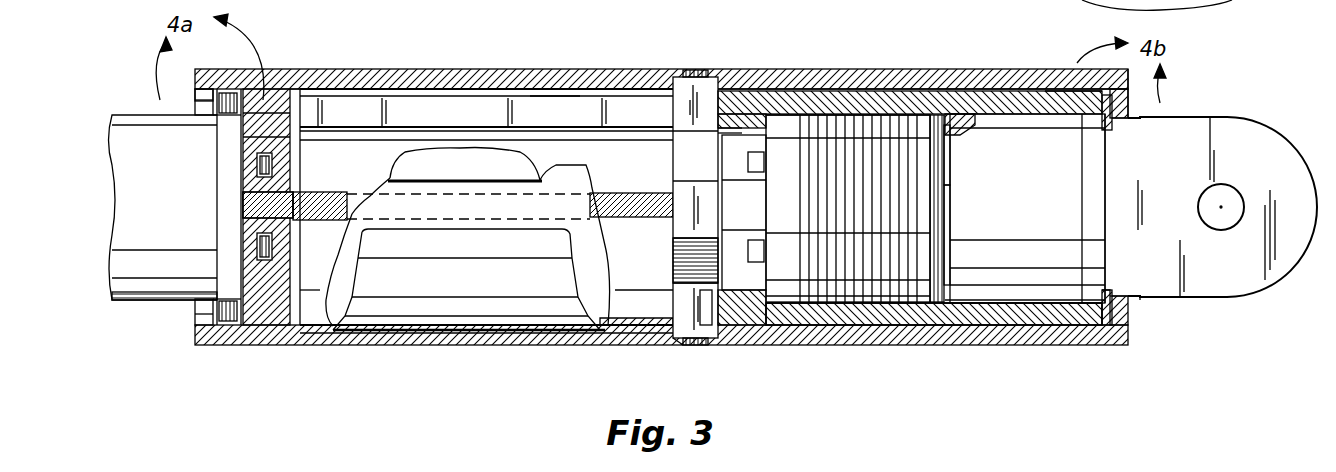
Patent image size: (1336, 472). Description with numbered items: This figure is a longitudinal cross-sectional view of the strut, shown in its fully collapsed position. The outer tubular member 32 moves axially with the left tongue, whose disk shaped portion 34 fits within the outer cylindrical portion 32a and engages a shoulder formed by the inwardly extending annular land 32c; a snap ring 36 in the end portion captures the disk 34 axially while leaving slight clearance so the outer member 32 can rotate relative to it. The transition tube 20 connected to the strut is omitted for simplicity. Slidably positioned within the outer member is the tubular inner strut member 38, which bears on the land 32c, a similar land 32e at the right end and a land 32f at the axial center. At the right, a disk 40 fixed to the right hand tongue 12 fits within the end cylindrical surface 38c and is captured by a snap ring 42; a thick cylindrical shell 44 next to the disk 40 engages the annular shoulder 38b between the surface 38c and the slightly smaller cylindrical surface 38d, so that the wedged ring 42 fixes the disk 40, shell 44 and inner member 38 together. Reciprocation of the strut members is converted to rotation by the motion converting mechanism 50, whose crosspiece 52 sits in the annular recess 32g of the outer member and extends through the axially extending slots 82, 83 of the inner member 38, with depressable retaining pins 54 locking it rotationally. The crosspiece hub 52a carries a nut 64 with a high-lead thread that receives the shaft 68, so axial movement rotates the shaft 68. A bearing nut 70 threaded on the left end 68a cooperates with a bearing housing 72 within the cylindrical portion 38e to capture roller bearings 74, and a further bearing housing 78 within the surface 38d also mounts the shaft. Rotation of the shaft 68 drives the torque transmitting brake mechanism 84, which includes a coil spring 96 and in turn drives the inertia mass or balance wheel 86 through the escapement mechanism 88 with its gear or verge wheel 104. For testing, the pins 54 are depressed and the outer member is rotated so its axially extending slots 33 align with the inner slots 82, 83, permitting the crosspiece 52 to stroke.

The right hand tongue 12 is at (1255, 275).
The transition tube 20 is at (127, 283).
The outer tubular member 32 is at (482, 77).
The outer cylindrical portion 32a is at (203, 118).
The inwardly extending annular land 32c is at (300, 100).
The inwardly extending annular land 32e is at (1130, 98).
The inwardly extending annular land 32f is at (720, 132).
The annular recess 32g is at (680, 332).
The axially extending slots 33 is at (465, 183).
The disk shaped portion 34 is at (254, 98).
The snap ring 36 is at (213, 86).
The inner strut member 38 is at (752, 100).
The annular shoulder 38b is at (948, 320).
The end cylindrical surface 38c is at (1045, 92).
The cylindrical surface 38d is at (808, 115).
The cylindrical portion 38e is at (262, 298).
The disk 40 is at (1097, 293).
The snap ring 42 is at (1107, 105).
The cylindrical shell 44 is at (962, 125).
The motion converting mechanism 50 is at (704, 311).
The crosspiece 52 is at (678, 87).
The enlarged hub section 52a is at (687, 210).
The retaining pin 54 is at (695, 70).
The nut 64 is at (733, 203).
The shaft 68 is at (610, 193).
The left end of the shaft 68a is at (293, 193).
The bearing nut 70 is at (258, 174).
The bearing housing 72 is at (254, 137).
The roller bearings 74 is at (262, 250).
The bearing housing 78 is at (782, 128).
The axially extending slot 82 is at (540, 121).
The axially extending slot 83 is at (652, 313).
The torque transmitting brake mechanism 84 is at (851, 304).
The inertia mass or balance wheel 86 is at (975, 120).
The escapement mechanism 88 is at (931, 114).
The coil spring 96 is at (946, 150).
The gear or verge wheel 104 is at (946, 223).